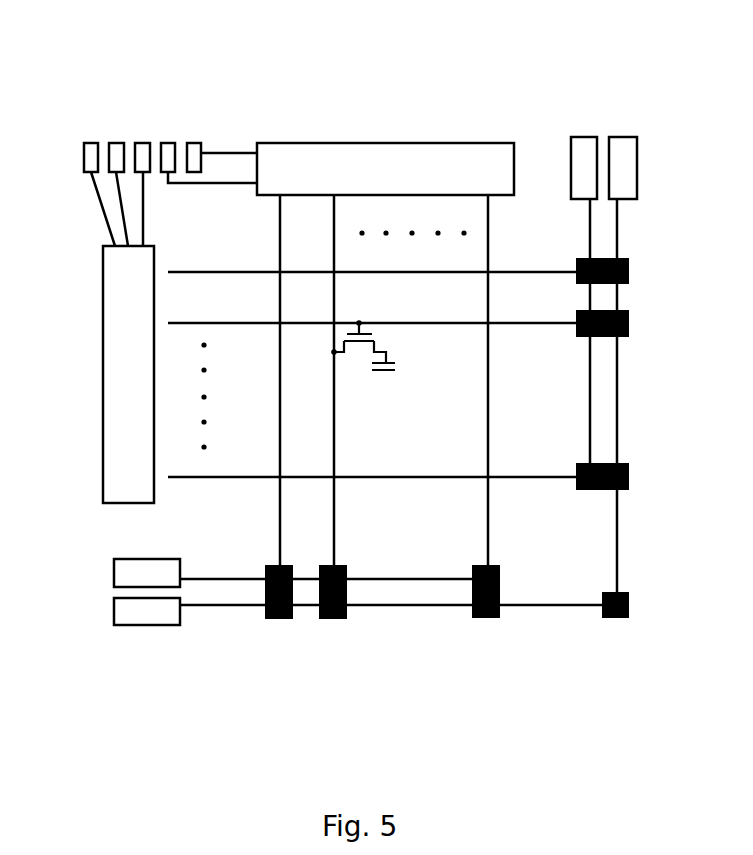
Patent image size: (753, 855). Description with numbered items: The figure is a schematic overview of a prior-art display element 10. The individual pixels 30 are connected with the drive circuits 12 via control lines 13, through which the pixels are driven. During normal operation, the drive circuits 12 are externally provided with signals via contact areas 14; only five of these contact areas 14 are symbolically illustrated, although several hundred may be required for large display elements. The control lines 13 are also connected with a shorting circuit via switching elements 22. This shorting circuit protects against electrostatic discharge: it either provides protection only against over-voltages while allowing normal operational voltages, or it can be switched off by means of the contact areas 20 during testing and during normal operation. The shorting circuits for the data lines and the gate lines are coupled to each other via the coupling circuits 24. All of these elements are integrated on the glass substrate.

The display element 10 is at (513, 104).
The drive circuits 12 is at (106, 432).
The control lines 13 is at (182, 268).
The contact areas 14 is at (83, 157).
The contact areas 20 is at (583, 137).
The switching elements 22 is at (629, 325).
The coupling circuits 24 is at (631, 605).
The pixels 30 is at (378, 376).